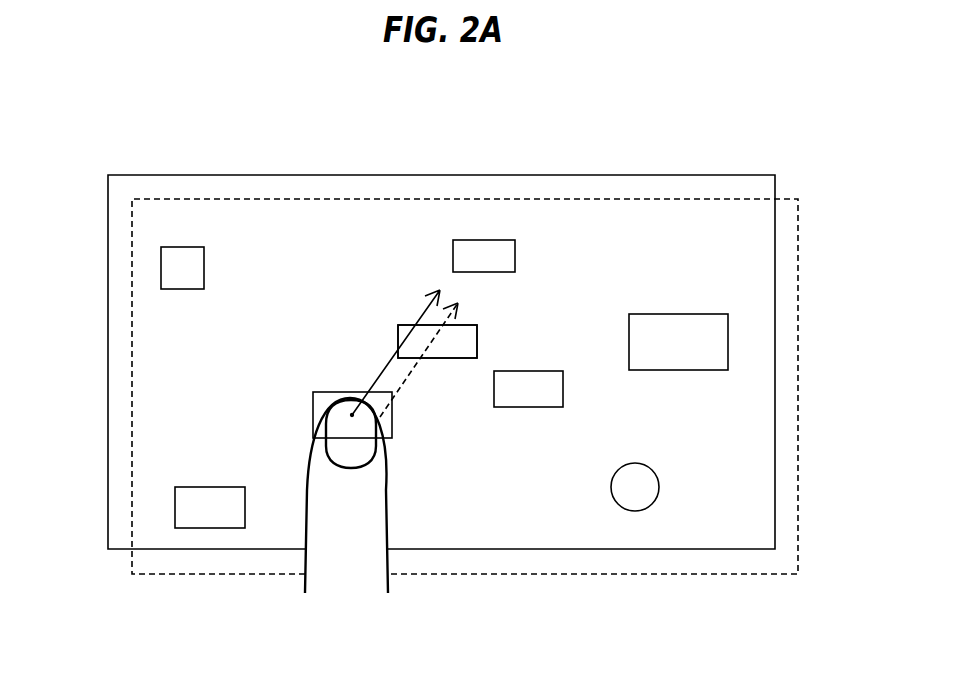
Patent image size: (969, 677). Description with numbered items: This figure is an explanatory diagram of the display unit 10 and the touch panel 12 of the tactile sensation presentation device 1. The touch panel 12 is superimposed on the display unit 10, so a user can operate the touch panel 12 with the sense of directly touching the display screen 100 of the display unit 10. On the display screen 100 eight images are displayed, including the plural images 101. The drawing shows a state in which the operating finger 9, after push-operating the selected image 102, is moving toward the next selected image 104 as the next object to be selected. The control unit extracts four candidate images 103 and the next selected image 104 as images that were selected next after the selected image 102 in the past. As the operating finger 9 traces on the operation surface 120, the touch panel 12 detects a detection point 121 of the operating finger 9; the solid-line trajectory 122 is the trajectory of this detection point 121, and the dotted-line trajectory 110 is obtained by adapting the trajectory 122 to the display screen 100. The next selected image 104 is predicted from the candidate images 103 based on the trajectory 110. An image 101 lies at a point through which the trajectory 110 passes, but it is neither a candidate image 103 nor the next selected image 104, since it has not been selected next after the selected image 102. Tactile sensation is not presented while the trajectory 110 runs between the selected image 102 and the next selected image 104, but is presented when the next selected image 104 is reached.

The tactile sensation presentation device 1 is at (789, 115).
The operating finger 9 is at (363, 562).
The display unit 10 is at (799, 205).
The touch panel 12 is at (775, 274).
The display screen 100 is at (788, 239).
The image 101 is at (210, 507).
The selected image 102 is at (352, 415).
The candidate image 103 is at (180, 268).
The next selected image 104 is at (483, 250).
The trajectory 110 is at (433, 338).
The operation surface 120 is at (762, 314).
The detection point 121 is at (327, 402).
The trajectory 122 is at (397, 352).